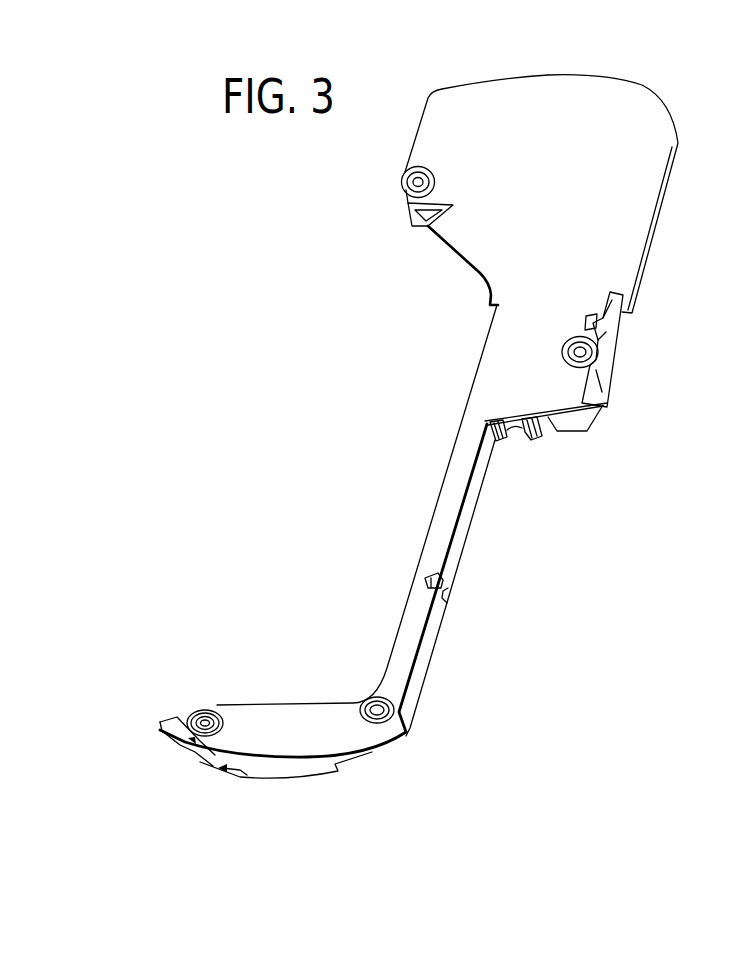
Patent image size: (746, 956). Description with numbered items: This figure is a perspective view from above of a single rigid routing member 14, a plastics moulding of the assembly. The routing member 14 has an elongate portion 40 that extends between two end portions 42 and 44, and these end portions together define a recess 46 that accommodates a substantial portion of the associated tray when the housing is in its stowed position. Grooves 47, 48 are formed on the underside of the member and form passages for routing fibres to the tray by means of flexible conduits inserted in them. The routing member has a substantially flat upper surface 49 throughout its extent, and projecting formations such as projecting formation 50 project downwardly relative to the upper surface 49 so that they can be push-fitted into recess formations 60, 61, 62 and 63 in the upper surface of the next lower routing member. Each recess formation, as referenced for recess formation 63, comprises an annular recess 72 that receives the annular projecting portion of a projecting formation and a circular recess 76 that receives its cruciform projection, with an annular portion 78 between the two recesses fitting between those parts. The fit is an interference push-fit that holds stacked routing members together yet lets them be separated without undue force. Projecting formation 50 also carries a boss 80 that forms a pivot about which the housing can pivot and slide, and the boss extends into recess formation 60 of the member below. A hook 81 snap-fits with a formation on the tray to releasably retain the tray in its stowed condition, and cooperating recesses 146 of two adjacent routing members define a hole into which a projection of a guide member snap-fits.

The rigid routing member 14 is at (348, 511).
The elongate portion 40 is at (453, 558).
The end portion 42 is at (322, 767).
The end portion 44 is at (656, 300).
The recess 46 is at (392, 455).
The groove 47 is at (512, 433).
The groove 48 is at (548, 428).
The upper surface 49 is at (562, 276).
The projecting formation 50 is at (741, 379).
The recess formation 60 is at (404, 179).
The recess formation 61 is at (545, 354).
The recess formation 62 is at (377, 746).
The recess formation 63 is at (236, 738).
The annular recess 72 is at (205, 721).
The circular recess 76 is at (202, 721).
The annular portion 78 is at (205, 745).
The boss 80 is at (393, 209).
The hook 81 is at (157, 727).
The cooperating recess 146 is at (425, 577).